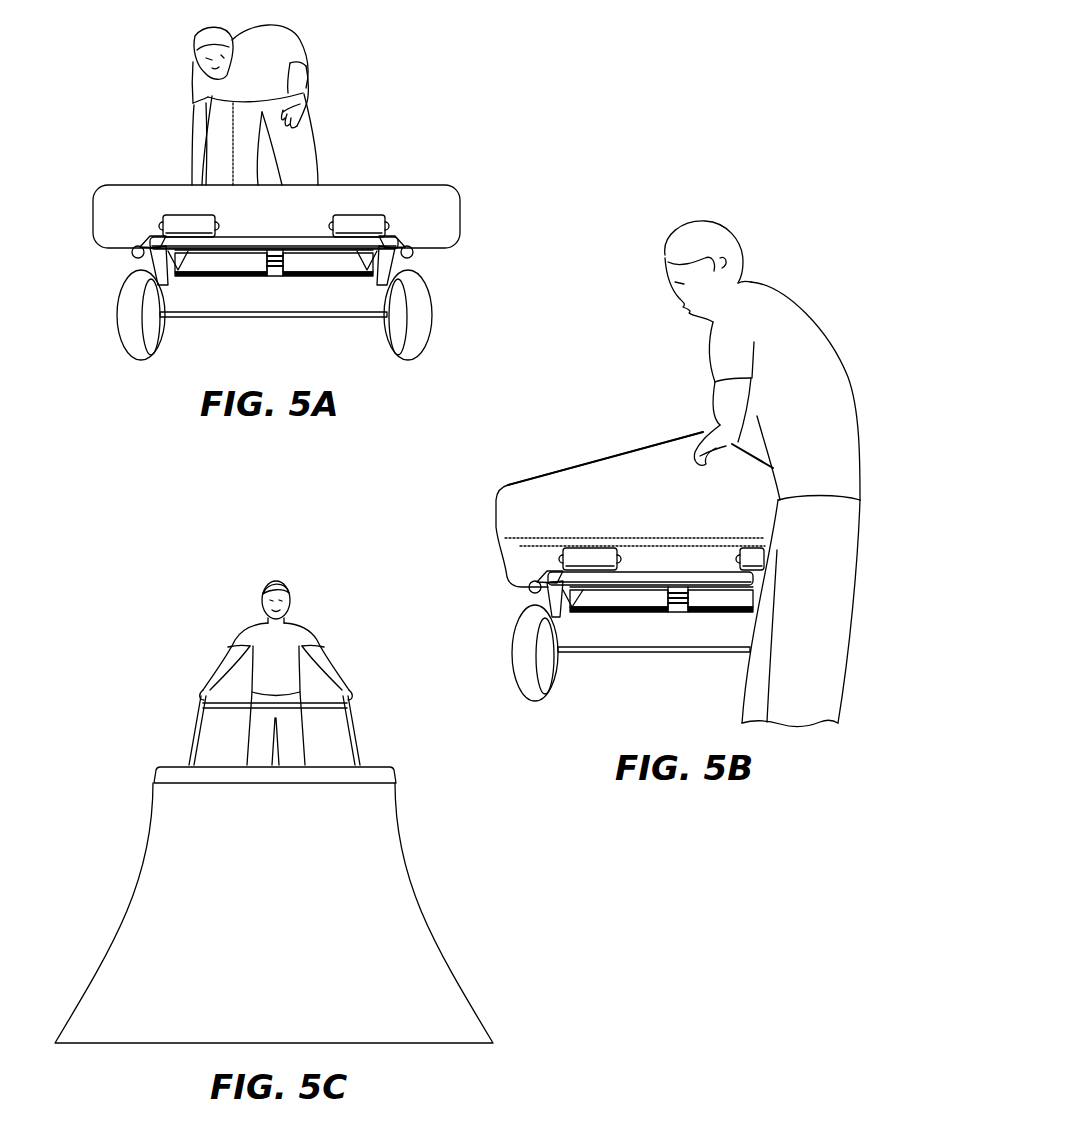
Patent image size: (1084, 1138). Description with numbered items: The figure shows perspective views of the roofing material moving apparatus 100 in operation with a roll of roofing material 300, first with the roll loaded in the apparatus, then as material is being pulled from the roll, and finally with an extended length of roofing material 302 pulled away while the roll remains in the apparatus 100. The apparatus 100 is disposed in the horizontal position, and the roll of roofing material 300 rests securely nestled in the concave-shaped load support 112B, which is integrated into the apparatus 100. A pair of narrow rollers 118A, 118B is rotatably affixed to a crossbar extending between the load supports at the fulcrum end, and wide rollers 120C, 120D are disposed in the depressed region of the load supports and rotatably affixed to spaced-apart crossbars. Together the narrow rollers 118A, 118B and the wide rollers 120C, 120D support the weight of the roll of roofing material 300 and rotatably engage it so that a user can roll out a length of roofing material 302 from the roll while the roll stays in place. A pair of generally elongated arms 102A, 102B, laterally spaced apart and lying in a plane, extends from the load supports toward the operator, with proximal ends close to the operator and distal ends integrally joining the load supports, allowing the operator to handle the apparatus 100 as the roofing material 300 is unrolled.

In FIG. 5A, the roofing material moving apparatus 100 is at (104, 298).
In FIG. 5C, the arm 102A is at (195, 727).
In FIG. 5C, the arm 102B is at (353, 727).
In FIG. 5A, the load support 112B is at (272, 291).
In FIG. 5B, the load support 112B is at (663, 630).
In FIG. 5A, the narrow roller 118A is at (185, 221).
In FIG. 5B, the narrow roller 118A is at (592, 553).
In FIG. 5A, the narrow roller 118B is at (367, 221).
In FIG. 5B, the narrow roller 118B is at (753, 560).
In FIG. 5A, the wide roller 120C is at (195, 262).
In FIG. 5B, the wide roller 120C is at (608, 597).
In FIG. 5A, the wide roller 120D is at (353, 262).
In FIG. 5B, the wide roller 120D is at (708, 600).
In FIG. 5A, the roll of roofing material 300 is at (467, 180).
In FIG. 5B, the roll of roofing material 300 is at (484, 550).
In FIG. 5C, the roll of roofing material 300 is at (383, 779).
In FIG. 5B, the length of roofing material 302 is at (644, 410).
In FIG. 5C, the length of roofing material 302 is at (385, 873).